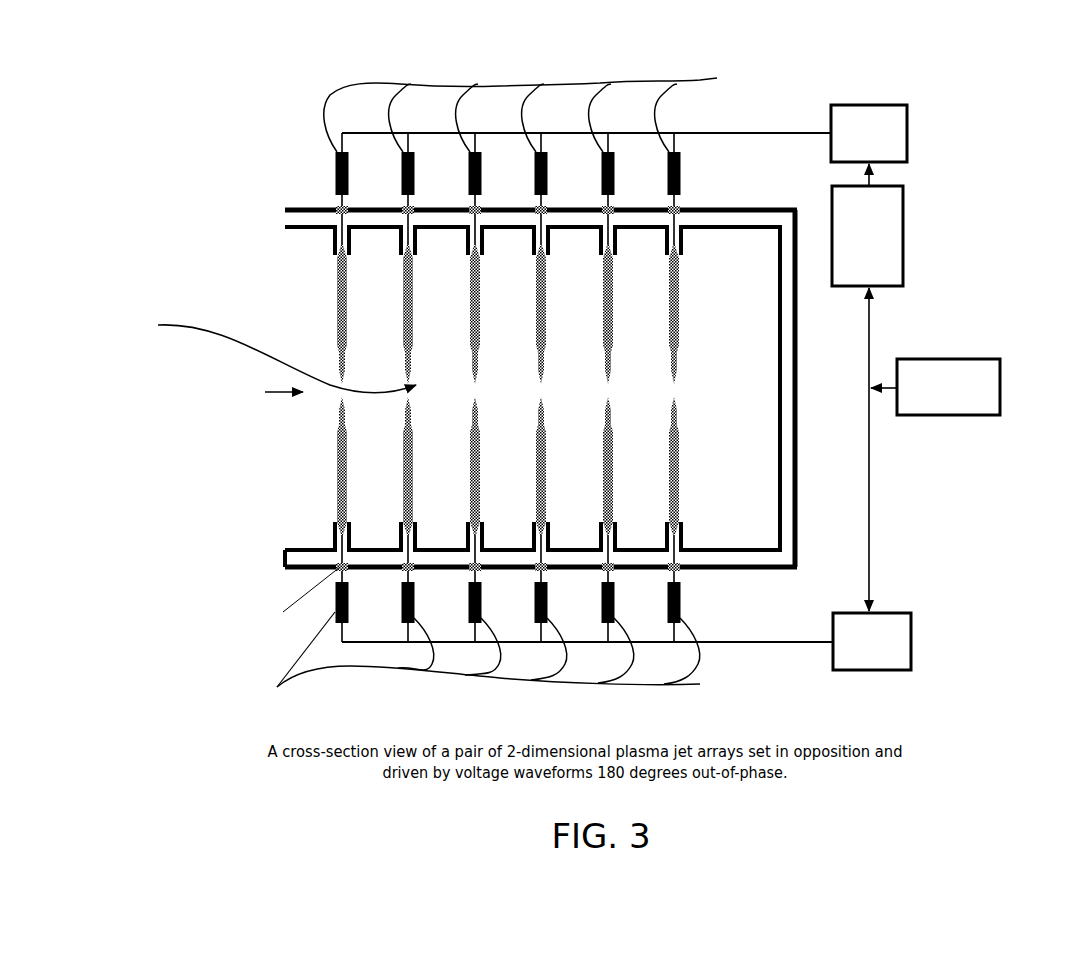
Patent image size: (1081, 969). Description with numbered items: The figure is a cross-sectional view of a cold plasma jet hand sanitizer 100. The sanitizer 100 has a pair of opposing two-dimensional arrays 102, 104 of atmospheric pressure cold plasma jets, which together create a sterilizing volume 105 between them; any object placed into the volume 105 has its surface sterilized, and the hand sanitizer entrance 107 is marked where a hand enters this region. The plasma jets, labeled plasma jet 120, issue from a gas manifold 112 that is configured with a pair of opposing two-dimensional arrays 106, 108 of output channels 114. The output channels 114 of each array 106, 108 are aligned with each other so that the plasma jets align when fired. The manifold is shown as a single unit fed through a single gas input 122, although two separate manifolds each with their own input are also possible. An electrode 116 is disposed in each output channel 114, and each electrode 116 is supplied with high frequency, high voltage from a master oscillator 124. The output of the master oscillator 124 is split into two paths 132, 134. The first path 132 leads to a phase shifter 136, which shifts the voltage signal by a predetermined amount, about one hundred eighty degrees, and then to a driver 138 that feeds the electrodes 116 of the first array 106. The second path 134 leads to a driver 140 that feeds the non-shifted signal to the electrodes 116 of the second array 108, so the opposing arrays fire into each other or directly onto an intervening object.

The cold plasma jet hand sanitizer 100 is at (282, 118).
The two-dimensional array of cold plasma jets 102 is at (700, 345).
The two-dimensional array of cold plasma jets 104 is at (700, 455).
The sterilizing volume 105 is at (267, 356).
The first array of output channels 106 is at (700, 245).
The hand sanitizer entrance 107 is at (244, 404).
The second array of output channels 108 is at (698, 540).
The gas manifold 112 is at (310, 557).
The output channel 114 is at (334, 238).
The electrode 116 is at (347, 217).
The plasma jet 120 is at (338, 310).
The gas input 122 is at (240, 193).
The master oscillator 124 is at (1000, 375).
The first path 132 is at (869, 327).
The second path 134 is at (869, 520).
The phase shifter 136 is at (903, 224).
The driver 138 is at (907, 147).
The driver 140 is at (911, 645).